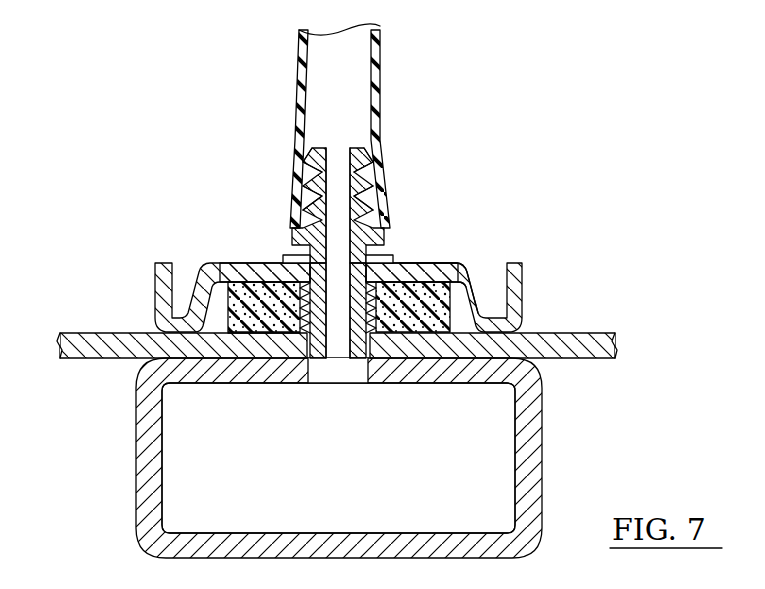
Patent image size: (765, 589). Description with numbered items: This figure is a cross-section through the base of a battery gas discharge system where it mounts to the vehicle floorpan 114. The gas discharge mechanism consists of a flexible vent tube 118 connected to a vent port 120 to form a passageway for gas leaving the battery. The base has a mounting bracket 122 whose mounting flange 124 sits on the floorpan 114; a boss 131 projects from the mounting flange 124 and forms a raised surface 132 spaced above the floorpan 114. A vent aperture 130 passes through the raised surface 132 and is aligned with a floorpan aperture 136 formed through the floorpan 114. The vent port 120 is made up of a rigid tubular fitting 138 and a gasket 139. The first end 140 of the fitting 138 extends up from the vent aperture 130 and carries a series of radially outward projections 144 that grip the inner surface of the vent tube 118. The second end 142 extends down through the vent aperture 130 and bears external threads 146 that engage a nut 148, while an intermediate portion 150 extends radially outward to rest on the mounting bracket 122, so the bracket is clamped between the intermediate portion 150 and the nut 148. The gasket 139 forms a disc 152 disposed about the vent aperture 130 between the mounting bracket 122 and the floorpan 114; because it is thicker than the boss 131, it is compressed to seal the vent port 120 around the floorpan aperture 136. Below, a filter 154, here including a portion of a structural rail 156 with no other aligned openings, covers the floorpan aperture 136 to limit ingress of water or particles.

The floorpan 114 is at (603, 333).
The vent tube 118 is at (302, 42).
The vent port 120 is at (338, 277).
The mounting bracket 122 is at (155, 310).
The mounting flange 124 is at (522, 283).
The vent aperture 130 is at (402, 268).
The boss 131 is at (483, 290).
The raised surface 132 is at (442, 275).
The floorpan aperture 136 is at (375, 352).
The fitting 138 is at (305, 240).
The gasket 139 is at (240, 334).
The first end 140 is at (293, 156).
The second end 142 is at (331, 336).
The projections 144 is at (300, 182).
The external threads 146 is at (306, 314).
The nut 148 is at (280, 336).
The intermediate portion 150 is at (290, 257).
The disc 152 is at (222, 295).
The filter 154 is at (150, 435).
The rail 156 is at (152, 480).